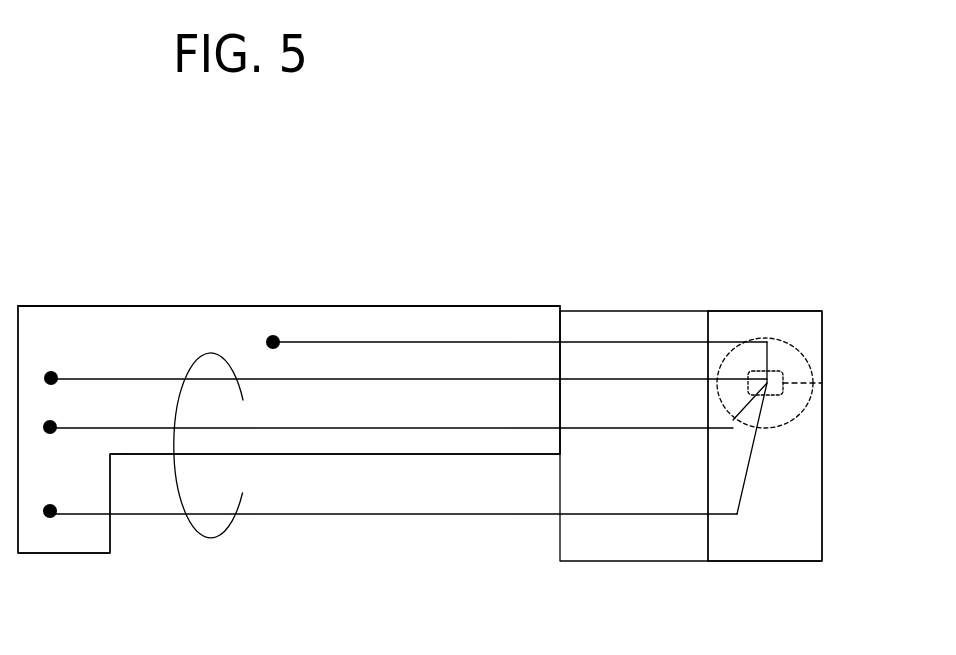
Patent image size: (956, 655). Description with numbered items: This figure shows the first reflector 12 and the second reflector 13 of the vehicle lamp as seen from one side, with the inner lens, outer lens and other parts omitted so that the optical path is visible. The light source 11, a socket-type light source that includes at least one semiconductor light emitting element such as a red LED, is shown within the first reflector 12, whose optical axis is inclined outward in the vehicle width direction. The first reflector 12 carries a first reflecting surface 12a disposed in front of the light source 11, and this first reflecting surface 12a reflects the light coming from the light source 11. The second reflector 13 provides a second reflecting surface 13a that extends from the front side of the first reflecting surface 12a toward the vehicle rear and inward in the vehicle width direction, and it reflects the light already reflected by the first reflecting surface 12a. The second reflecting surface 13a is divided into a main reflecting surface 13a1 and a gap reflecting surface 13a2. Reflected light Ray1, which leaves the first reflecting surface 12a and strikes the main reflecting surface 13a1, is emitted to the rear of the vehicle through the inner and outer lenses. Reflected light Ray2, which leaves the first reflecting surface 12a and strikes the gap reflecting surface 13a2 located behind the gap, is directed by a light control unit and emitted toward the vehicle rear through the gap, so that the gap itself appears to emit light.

The light source 11 is at (822, 381).
The first reflector 12 is at (765, 310).
The first reflecting surface 12a is at (765, 436).
The second reflector 13 is at (530, 306).
The second reflecting surface 13a is at (470, 306).
The main reflecting surface 13a1 is at (553, 295).
The gap reflecting surface 13a2 is at (127, 293).
The reflected light Ray1 is at (413, 342).
The reflected light Ray2 is at (213, 537).